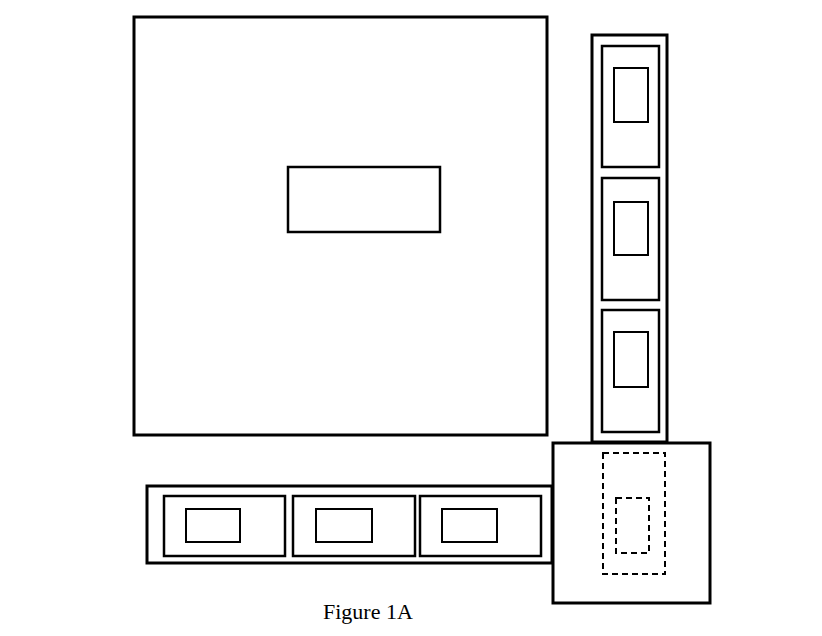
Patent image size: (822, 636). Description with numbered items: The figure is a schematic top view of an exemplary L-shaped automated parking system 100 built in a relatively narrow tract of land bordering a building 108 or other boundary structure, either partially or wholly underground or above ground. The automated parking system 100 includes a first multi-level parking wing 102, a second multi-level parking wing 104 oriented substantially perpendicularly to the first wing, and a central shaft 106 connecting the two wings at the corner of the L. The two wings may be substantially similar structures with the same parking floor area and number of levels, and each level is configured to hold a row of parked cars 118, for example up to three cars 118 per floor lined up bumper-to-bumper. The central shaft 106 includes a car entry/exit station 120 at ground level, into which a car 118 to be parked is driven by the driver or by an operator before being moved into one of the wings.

The automated parking system 100 is at (700, 316).
The first multi-level parking wing 102 is at (147, 522).
The second multi-level parking wing 104 is at (667, 160).
The central shaft 106 is at (710, 537).
The building 108 is at (134, 284).
The car 118 is at (643, 403).
The car entry/exit station 120 is at (710, 473).